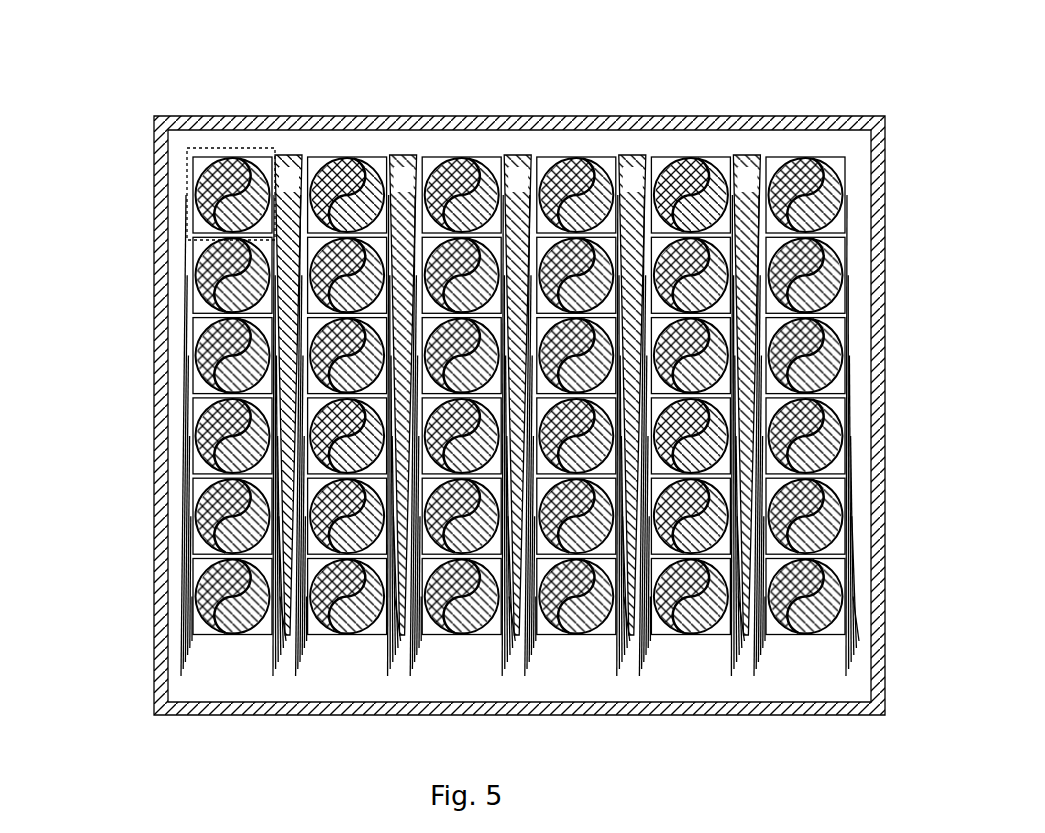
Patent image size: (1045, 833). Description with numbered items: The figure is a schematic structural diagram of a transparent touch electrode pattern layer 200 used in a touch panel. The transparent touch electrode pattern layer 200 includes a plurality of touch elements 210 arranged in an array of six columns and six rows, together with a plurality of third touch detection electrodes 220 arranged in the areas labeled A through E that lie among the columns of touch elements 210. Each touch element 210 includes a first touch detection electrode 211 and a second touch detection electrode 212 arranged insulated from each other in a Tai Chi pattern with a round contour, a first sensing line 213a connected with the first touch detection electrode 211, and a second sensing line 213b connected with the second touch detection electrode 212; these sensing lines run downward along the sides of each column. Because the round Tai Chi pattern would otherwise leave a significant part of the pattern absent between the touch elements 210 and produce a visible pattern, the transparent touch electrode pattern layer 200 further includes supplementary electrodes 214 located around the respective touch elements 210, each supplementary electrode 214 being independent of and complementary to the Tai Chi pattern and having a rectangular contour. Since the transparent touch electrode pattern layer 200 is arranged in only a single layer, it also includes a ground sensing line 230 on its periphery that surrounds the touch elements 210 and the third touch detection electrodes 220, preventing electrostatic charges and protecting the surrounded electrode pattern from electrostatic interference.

The transparent touch electrode pattern layer 200 is at (776, 67).
The touch element 210 is at (187, 148).
The first touch detection electrode 211 is at (196, 188).
The second touch detection electrode 212 is at (246, 159).
The first sensing line 213a is at (186, 267).
The second sensing line 213b is at (275, 658).
The supplementary electrode 214 is at (197, 170).
The third touch detection electrode 220 is at (287, 157).
The ground sensing line 230 is at (517, 117).